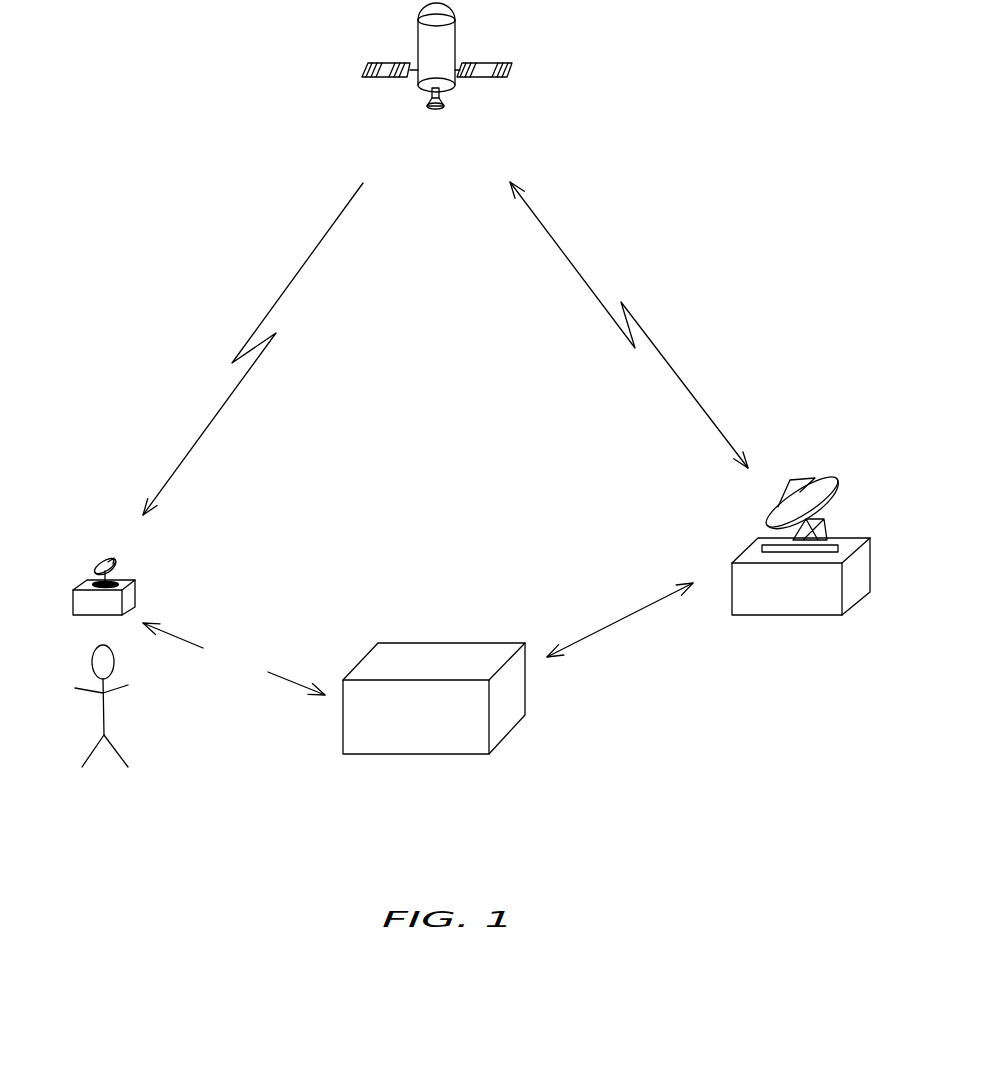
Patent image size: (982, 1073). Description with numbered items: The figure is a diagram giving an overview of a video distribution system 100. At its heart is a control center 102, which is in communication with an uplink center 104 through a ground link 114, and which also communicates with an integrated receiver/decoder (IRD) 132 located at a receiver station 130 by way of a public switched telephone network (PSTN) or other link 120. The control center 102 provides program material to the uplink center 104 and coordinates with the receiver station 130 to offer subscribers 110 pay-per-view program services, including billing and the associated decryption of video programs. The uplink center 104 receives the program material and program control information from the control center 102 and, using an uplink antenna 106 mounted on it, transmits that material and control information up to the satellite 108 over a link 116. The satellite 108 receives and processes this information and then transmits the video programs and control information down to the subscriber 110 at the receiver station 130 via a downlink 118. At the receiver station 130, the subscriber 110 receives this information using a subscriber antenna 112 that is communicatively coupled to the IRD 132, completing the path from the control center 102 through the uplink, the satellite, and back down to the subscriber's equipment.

The video distribution system 100 is at (719, 220).
The control center 102 is at (522, 732).
The uplink center 104 is at (785, 615).
The uplink antenna 106 is at (835, 490).
The satellite 108 is at (482, 77).
The subscriber 110 is at (130, 710).
The subscriber antenna 112 is at (102, 559).
The ground link 114 is at (617, 621).
The satellite-gateway link 116 is at (666, 365).
The downlink 118 is at (302, 268).
The public switched telephone network (PSTN) or other link 120 is at (267, 633).
The receiver station 130 is at (155, 567).
The integrated receiver/decoder (IRD) 132 is at (73, 603).